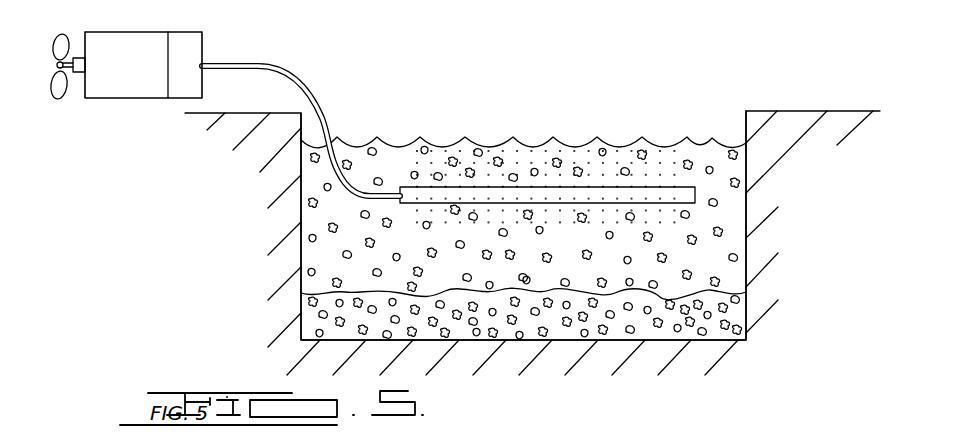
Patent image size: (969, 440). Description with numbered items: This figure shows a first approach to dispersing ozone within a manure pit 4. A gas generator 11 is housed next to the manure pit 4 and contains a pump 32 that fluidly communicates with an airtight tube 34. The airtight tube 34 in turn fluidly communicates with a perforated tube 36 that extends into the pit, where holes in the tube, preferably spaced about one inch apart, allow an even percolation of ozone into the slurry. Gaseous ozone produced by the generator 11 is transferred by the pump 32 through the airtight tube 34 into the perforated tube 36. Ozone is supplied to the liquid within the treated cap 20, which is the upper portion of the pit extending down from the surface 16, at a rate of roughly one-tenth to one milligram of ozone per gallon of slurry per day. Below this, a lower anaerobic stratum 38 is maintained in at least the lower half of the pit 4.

The manure pit 4 is at (300, 257).
The gas generator 11 is at (197, 50).
The surface 16 is at (477, 143).
The cap 20 is at (565, 180).
The pump 32 is at (122, 88).
The airtight tube 34 is at (322, 112).
The perforated tube 36 is at (658, 190).
The lower anaerobic stratum 38 is at (738, 317).